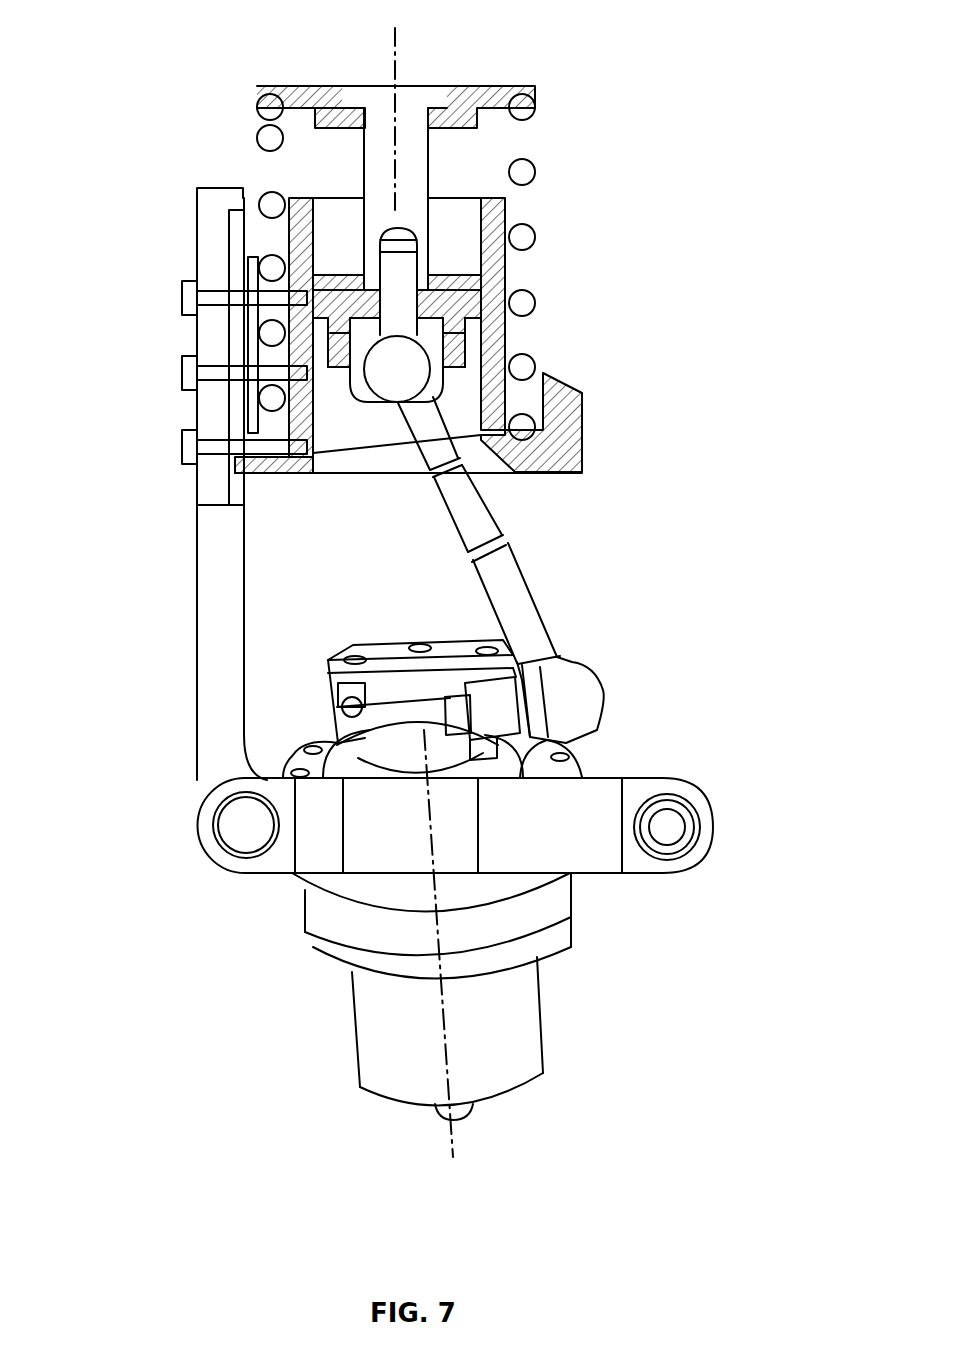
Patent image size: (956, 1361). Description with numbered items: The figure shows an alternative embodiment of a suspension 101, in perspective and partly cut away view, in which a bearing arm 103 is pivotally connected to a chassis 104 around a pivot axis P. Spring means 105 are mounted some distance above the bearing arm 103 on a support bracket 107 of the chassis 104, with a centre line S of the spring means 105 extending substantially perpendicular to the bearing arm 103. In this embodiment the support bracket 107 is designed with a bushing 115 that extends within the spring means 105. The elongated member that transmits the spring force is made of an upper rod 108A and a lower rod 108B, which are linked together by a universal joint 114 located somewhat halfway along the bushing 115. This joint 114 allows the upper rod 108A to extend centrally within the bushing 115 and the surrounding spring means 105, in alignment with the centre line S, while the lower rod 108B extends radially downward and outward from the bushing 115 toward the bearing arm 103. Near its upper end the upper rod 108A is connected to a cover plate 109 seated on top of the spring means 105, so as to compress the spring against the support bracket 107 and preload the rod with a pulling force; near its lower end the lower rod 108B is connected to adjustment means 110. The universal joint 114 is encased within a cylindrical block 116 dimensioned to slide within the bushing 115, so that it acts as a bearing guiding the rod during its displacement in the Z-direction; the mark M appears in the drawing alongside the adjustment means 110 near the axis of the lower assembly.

The suspension 101 is at (692, 73).
The cover plate 109 is at (480, 87).
The upper rod 108A is at (410, 168).
The spring means 105 is at (523, 235).
The cylindrical block 116 is at (463, 307).
The bushing 115 is at (508, 337).
The universal joint 114 is at (397, 373).
The support bracket 107 is at (560, 458).
The chassis 104 is at (218, 598).
The lower rod 108B is at (512, 583).
The bearing arm 103 is at (597, 795).
The adjustment means 110 is at (507, 1007).
The pivot axis P is at (245, 822).
The motor axis M is at (467, 953).
The centre line S is at (353, 19).